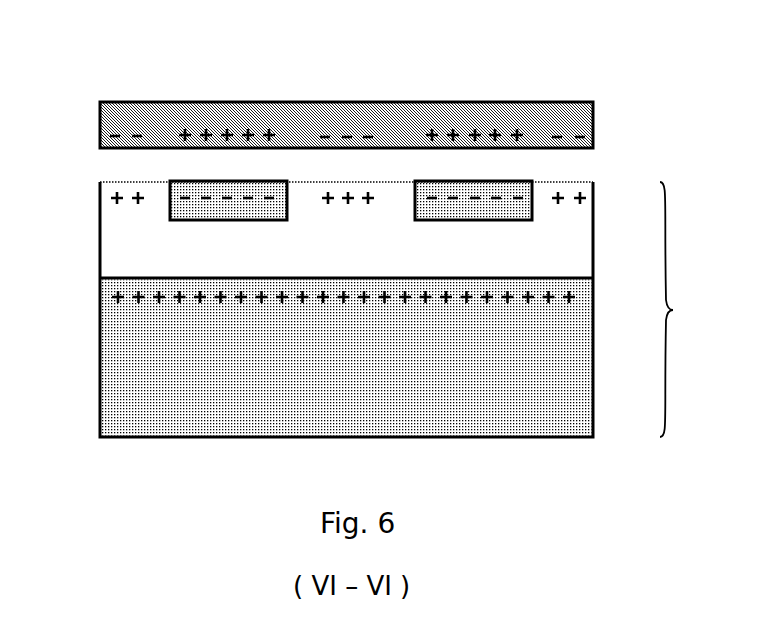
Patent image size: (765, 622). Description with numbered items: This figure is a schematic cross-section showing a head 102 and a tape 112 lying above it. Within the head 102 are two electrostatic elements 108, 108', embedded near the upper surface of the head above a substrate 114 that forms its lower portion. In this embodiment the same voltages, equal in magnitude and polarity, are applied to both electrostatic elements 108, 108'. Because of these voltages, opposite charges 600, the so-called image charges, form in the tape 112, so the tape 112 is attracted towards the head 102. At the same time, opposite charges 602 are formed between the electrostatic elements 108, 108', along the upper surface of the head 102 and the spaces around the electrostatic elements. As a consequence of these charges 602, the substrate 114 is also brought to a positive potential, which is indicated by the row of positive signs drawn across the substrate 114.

The head 102 is at (408, 309).
The electrostatic element 108 is at (228, 131).
The electrostatic element 108' is at (504, 132).
The tape 112 is at (388, 123).
The substrate 114 is at (115, 355).
The opposite charges 600 is at (251, 115).
The opposite charges 602 is at (119, 182).